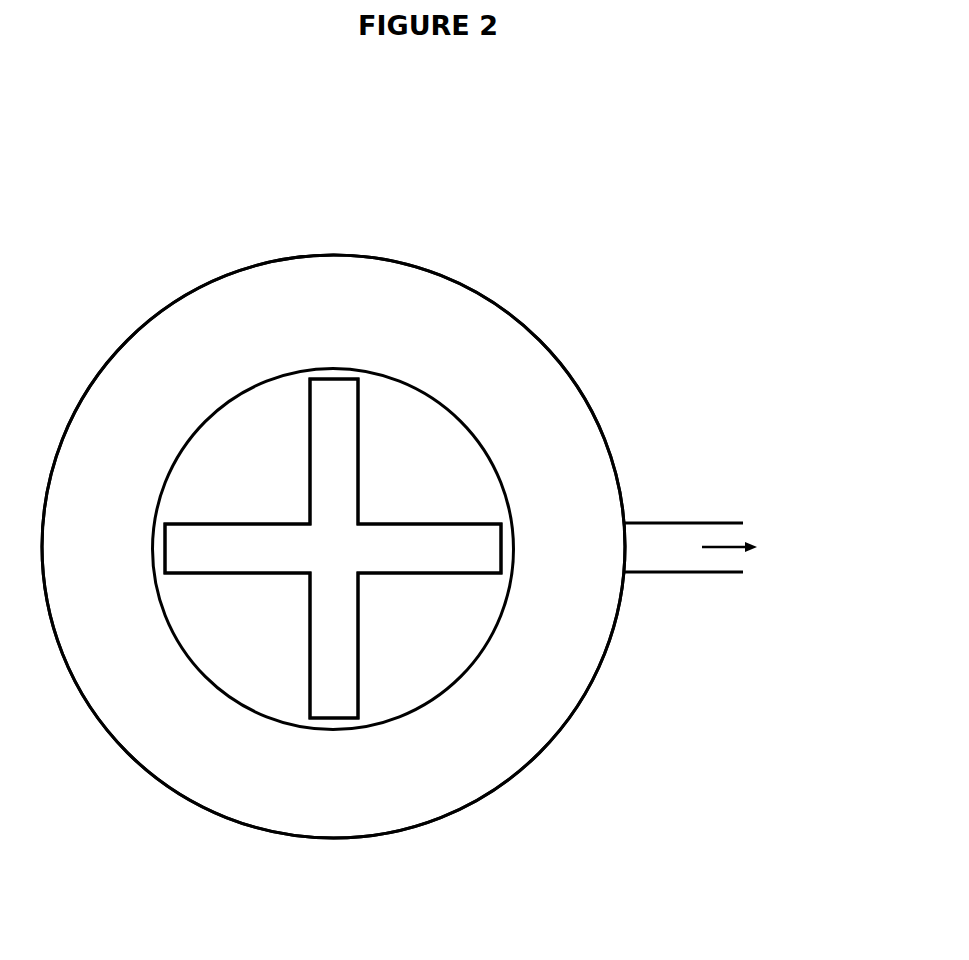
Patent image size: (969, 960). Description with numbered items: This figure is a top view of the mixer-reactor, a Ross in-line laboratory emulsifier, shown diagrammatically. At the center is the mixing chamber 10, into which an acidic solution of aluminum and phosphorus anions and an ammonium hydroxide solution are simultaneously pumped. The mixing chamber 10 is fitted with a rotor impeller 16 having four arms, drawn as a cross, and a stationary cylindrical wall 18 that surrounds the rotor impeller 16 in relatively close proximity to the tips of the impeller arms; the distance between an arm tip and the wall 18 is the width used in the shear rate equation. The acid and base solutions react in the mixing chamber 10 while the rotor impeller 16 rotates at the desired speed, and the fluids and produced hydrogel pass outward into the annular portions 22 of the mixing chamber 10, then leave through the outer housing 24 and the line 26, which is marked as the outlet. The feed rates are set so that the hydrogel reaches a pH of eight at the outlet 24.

The mixing chamber 10 is at (395, 626).
The rotor impeller 16 is at (338, 393).
The stationary cylindrical wall 18 is at (490, 455).
The annular portions 22 is at (127, 713).
The outer housing 24 is at (565, 723).
The line 26 is at (643, 522).